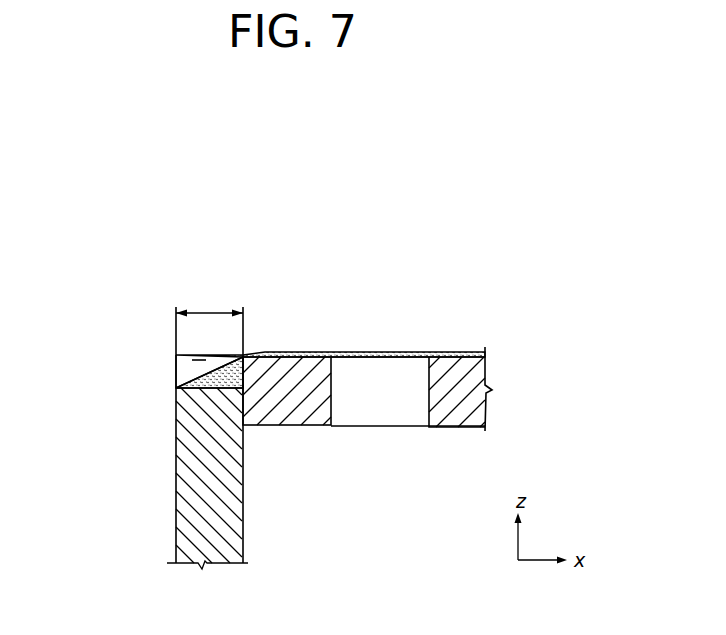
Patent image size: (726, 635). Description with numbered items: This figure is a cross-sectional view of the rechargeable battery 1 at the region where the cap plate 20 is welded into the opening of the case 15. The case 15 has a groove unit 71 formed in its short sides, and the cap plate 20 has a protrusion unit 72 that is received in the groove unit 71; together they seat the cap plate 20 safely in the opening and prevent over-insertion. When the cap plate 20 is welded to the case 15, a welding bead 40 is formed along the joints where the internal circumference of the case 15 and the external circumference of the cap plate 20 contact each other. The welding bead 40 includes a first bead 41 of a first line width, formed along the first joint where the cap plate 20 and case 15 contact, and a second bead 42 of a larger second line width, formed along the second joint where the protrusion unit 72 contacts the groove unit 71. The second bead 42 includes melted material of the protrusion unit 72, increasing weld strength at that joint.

The rechargeable battery 1 is at (377, 232).
The case 15 is at (198, 487).
The cap plate 20 is at (448, 380).
The welding bead 40 is at (330, 281).
The first bead 41 is at (330, 352).
The second bead 42 is at (224, 358).
The groove unit 71 is at (183, 370).
The protrusion unit 72 is at (172, 342).